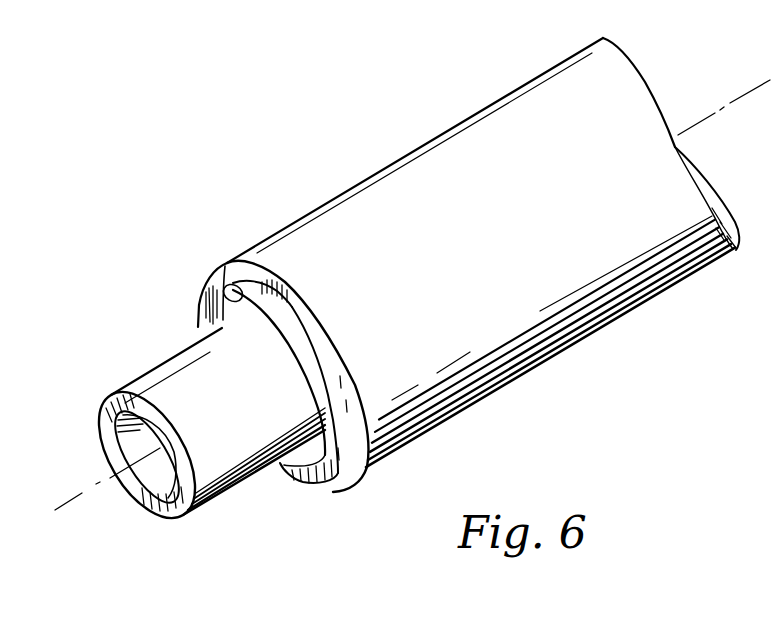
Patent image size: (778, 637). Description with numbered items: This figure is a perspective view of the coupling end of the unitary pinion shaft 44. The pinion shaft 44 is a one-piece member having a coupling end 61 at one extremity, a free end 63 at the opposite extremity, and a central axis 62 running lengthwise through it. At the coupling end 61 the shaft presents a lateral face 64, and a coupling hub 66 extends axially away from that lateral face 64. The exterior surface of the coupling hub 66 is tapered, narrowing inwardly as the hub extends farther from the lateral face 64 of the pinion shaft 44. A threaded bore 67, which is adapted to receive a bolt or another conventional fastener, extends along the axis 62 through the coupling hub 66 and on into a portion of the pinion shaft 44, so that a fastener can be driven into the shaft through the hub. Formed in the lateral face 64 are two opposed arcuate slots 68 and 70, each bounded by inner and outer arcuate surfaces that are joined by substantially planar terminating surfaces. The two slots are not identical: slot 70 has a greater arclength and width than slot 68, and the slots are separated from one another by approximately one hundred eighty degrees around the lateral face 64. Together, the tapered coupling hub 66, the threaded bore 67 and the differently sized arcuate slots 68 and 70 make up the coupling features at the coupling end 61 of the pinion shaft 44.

The unitary pinion shaft 44 is at (433, 148).
The coupling end 61 is at (382, 460).
The axis 62 is at (777, 75).
The free end 63 is at (667, 260).
The lateral face 64 is at (200, 297).
The coupling hub 66 is at (259, 458).
The threaded bore 67 is at (167, 508).
The arcuate slot 68 is at (222, 265).
The arcuate slot 70 is at (337, 482).